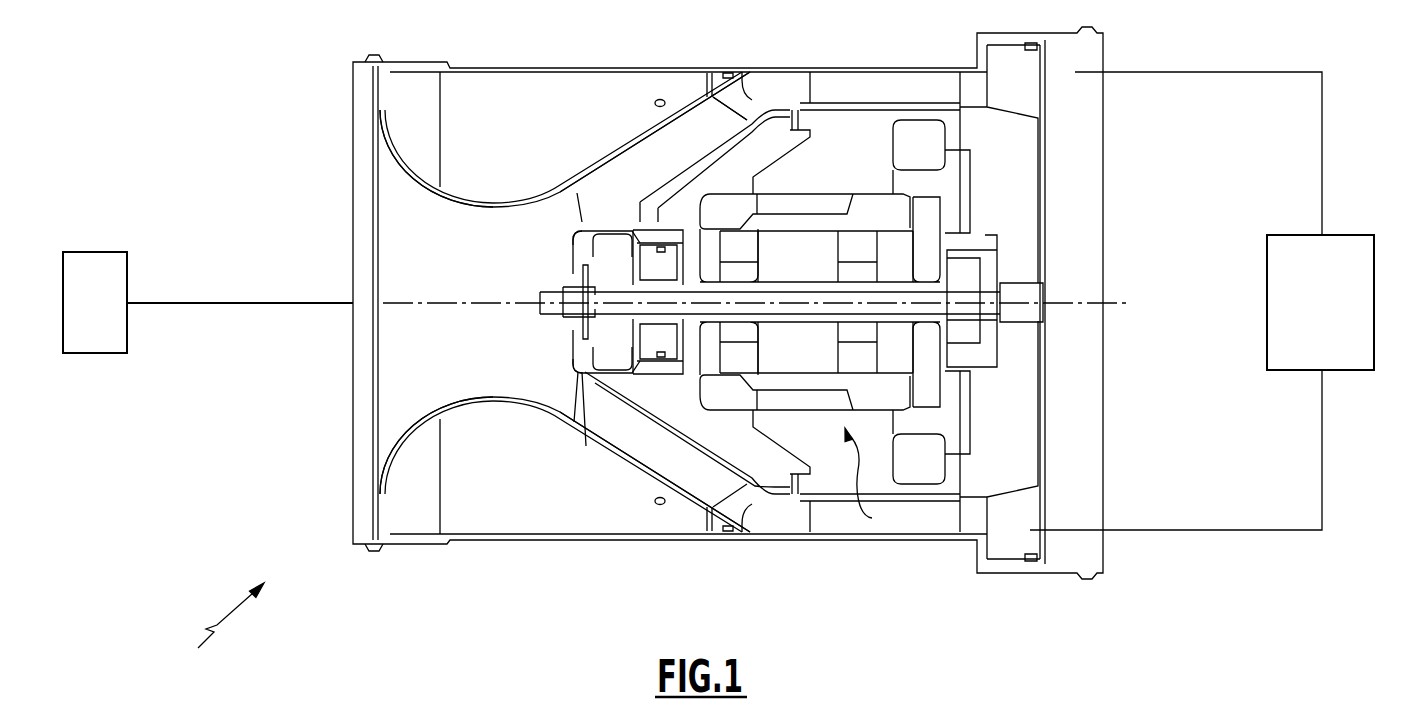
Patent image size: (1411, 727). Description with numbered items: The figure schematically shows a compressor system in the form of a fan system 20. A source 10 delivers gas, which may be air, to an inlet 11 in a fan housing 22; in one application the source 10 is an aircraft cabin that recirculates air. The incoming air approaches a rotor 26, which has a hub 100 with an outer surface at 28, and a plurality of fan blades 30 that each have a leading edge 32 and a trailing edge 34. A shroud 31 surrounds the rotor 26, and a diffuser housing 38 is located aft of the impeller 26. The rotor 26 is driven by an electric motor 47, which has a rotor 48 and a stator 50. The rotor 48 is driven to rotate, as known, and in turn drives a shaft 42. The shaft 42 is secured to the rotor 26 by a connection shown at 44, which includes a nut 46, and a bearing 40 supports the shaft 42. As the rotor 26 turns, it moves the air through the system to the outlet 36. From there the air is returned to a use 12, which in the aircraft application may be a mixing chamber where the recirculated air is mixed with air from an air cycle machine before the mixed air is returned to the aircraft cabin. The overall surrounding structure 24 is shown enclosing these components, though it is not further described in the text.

The source 10 is at (102, 252).
The inlet 11 is at (365, 318).
The use 12 is at (1345, 245).
The fan system 20 is at (214, 625).
The fan housing 22 is at (477, 202).
The housing 24 is at (583, 67).
The rotor 26 is at (575, 258).
The outer surface 28 is at (577, 225).
The fan blades 30 is at (663, 157).
The shroud 31 is at (601, 153).
The leading edge 32 is at (603, 219).
The trailing edge 34 is at (748, 95).
The outlet 36 is at (782, 87).
The diffuser housing 38 is at (806, 128).
The bearing 40 is at (660, 337).
The shaft 42 is at (920, 297).
The connection 44 is at (602, 275).
The nut 46 is at (580, 323).
The electric motor 47 is at (874, 481).
The rotor 48 is at (840, 358).
The stator 50 is at (883, 217).
The hub 100 is at (586, 446).